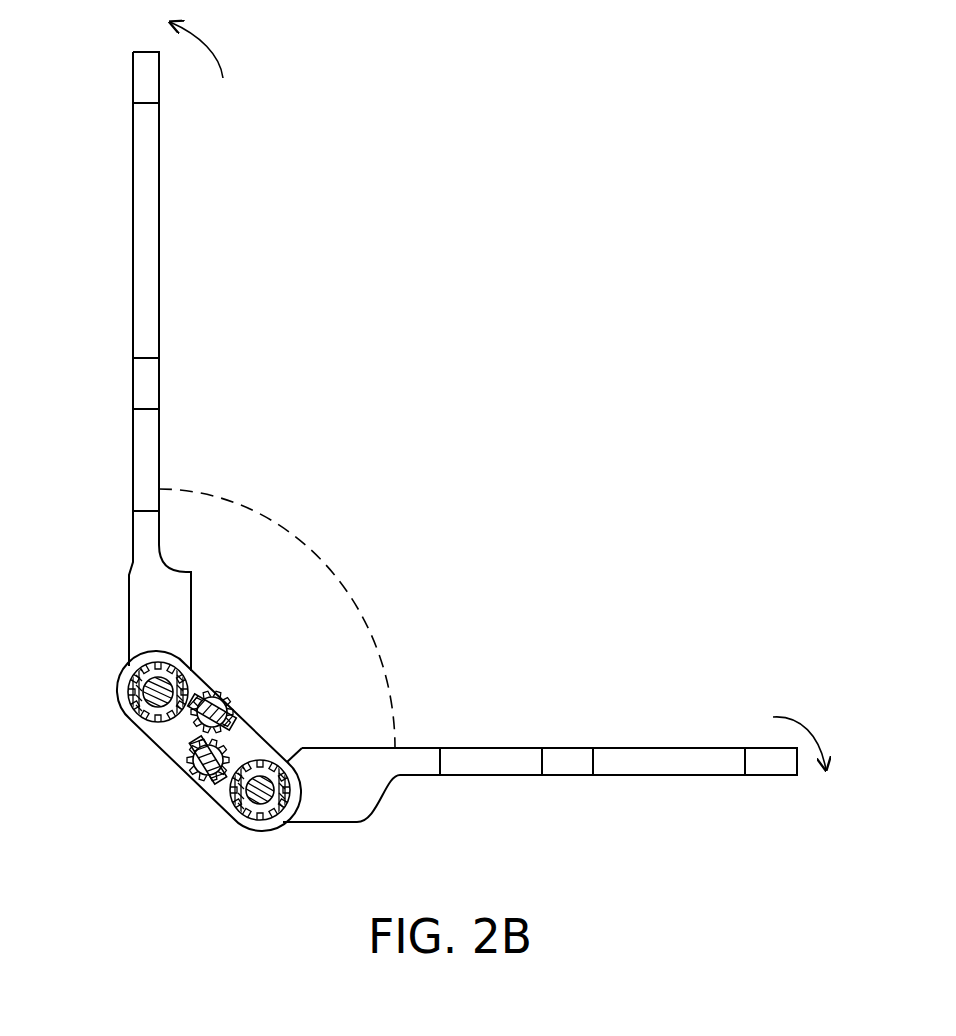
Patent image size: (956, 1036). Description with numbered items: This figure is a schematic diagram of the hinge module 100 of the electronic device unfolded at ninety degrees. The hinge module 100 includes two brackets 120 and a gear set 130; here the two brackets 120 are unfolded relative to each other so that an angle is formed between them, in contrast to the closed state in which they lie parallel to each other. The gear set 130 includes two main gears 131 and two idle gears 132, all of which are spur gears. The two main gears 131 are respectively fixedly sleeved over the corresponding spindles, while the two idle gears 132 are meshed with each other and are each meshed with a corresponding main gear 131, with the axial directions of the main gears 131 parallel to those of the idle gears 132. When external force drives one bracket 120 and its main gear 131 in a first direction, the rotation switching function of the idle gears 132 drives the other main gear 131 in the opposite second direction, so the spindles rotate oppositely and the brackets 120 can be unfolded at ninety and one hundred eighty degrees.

The hinge module 100 is at (440, 458).
The bracket 120 is at (147, 217).
The gear set 130 is at (168, 778).
The main gear 131 is at (126, 691).
The idle gear 132 is at (185, 733).